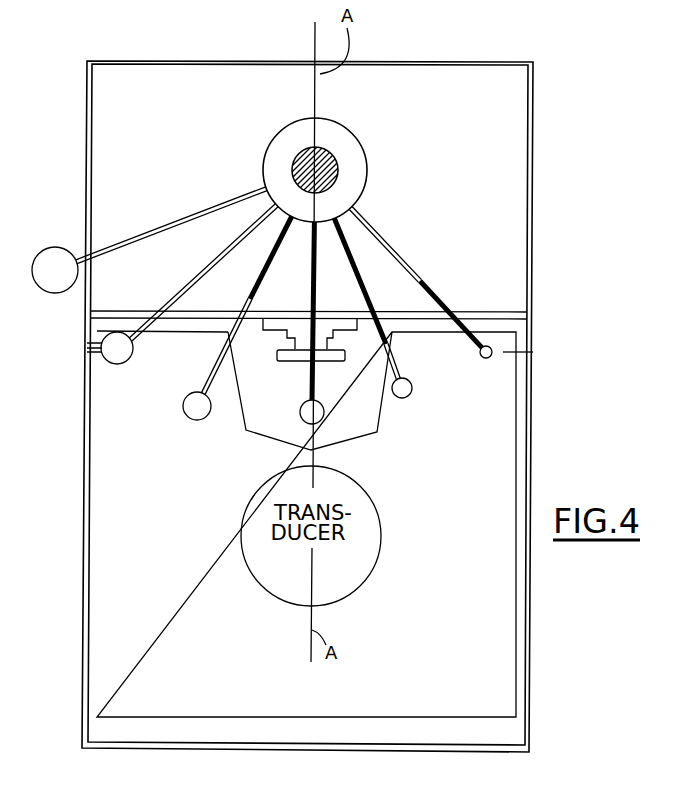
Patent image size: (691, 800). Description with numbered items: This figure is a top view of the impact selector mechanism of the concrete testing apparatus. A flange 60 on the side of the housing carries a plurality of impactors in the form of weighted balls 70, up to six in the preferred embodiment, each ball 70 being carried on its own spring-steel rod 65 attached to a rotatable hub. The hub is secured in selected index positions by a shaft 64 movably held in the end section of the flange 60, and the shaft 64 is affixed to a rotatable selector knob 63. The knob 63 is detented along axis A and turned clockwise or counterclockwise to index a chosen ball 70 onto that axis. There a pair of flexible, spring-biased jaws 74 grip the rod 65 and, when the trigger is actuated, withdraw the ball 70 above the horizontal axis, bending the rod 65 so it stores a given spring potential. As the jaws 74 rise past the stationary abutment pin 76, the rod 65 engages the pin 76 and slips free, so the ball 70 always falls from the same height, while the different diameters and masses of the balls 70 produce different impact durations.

The flange 60 is at (533, 240).
The selector knob 63 is at (353, 183).
The shaft 64 is at (328, 155).
The spring-steel rod 65 is at (195, 219).
The weighted ball 70 is at (64, 292).
The flexible jaws 74 is at (288, 362).
The abutment pin 76 is at (320, 363).